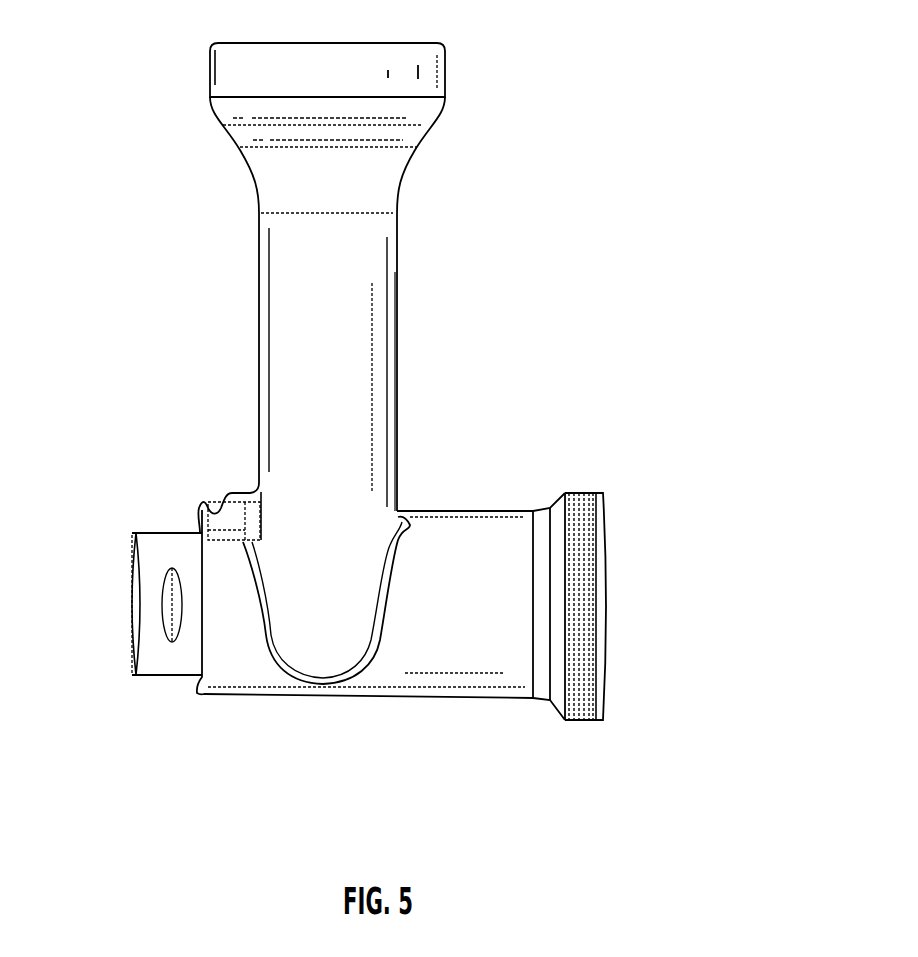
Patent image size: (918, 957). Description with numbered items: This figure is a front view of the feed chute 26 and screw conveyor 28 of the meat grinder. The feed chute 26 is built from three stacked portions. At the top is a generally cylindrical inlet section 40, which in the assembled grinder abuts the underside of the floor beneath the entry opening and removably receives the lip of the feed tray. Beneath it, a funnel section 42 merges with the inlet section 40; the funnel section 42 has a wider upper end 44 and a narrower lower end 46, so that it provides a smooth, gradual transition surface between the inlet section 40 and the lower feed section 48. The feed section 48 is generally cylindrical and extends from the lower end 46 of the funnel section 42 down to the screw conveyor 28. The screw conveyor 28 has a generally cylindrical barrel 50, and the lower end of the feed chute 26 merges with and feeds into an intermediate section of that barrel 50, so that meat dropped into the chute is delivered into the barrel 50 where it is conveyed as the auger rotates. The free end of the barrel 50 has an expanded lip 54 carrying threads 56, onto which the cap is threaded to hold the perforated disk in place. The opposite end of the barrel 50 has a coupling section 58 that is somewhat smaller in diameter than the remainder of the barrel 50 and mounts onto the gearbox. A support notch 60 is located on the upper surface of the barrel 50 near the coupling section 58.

The feed chute 26 is at (696, 291).
The screw conveyor 28 is at (413, 736).
The inlet section 40 is at (445, 75).
The funnel section 42 is at (412, 137).
The upper end 44 is at (445, 105).
The lower end 46 is at (400, 172).
The feed section 48 is at (380, 398).
The barrel 50 is at (495, 528).
The expanded lip 54 is at (604, 555).
The threads 56 is at (590, 638).
The coupling section 58 is at (153, 565).
The support notch 60 is at (222, 505).